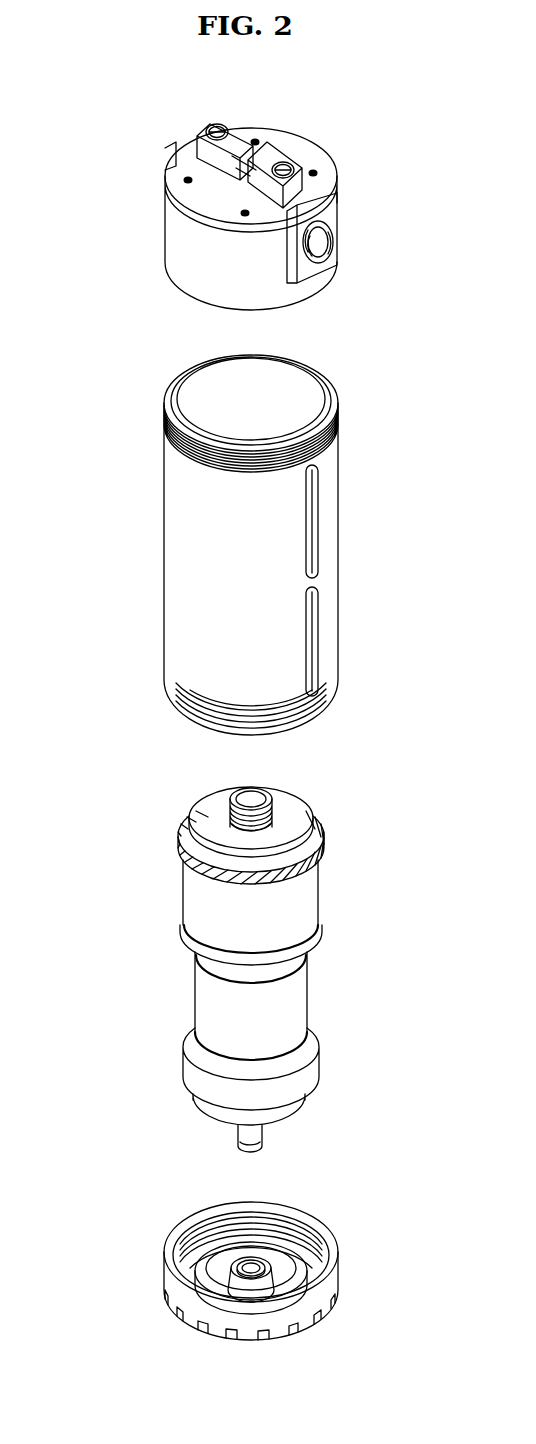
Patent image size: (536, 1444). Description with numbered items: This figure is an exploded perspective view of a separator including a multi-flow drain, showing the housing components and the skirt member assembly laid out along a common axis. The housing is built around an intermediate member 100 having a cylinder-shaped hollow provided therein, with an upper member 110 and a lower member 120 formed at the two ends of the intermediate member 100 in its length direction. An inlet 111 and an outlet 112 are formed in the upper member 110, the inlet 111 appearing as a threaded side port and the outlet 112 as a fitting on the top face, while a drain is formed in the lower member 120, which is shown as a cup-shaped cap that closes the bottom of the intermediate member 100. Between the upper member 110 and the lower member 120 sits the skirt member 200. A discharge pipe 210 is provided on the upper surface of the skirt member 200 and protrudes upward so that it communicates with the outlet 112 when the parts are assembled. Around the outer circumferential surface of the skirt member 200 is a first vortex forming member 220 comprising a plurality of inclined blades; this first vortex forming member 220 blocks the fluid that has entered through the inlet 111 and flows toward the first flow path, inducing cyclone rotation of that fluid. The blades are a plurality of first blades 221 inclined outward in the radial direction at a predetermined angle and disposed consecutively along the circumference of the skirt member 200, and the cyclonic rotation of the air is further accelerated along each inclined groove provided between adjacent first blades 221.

The intermediate member 100 is at (172, 553).
The upper member 110 is at (175, 233).
The inlet 111 is at (335, 245).
The outlet 112 is at (177, 142).
The lower member 120 is at (190, 1296).
The skirt member 200 is at (242, 954).
The discharge pipe 210 is at (245, 800).
The first vortex forming member 220 is at (242, 847).
The first blades 221 is at (318, 855).